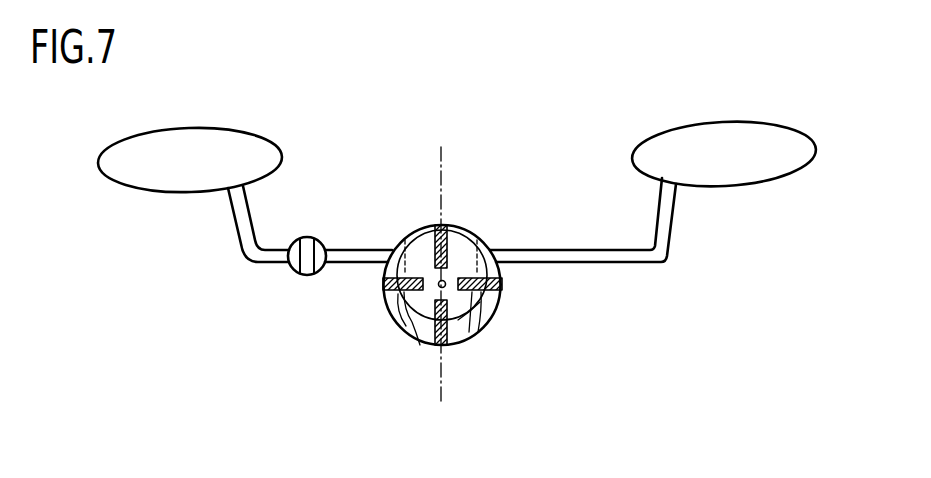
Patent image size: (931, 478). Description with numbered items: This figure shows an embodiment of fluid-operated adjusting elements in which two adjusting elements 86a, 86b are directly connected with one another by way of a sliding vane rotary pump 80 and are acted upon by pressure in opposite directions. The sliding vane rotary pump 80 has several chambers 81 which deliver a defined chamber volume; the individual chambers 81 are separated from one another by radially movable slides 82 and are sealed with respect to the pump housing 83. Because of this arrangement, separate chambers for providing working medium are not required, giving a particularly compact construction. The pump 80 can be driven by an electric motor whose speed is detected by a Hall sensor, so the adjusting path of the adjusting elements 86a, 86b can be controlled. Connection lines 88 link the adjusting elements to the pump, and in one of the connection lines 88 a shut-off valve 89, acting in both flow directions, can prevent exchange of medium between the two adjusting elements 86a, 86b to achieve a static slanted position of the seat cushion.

The sliding vane rotary pump 80 is at (422, 307).
The chambers 81 is at (505, 272).
The radially movable slides 82 is at (449, 332).
The pump housing 83 is at (417, 342).
The adjusting element 86a is at (250, 155).
The adjusting element 86b is at (782, 142).
The connection lines 88 is at (357, 250).
The shut-off valve 89 is at (291, 272).